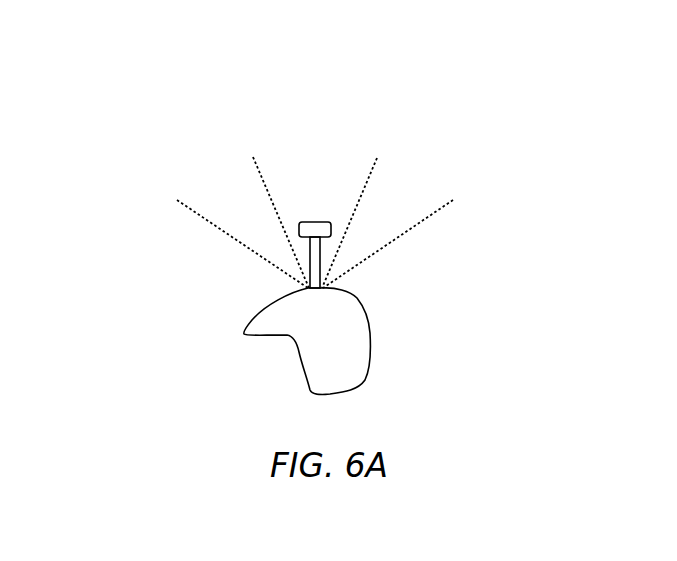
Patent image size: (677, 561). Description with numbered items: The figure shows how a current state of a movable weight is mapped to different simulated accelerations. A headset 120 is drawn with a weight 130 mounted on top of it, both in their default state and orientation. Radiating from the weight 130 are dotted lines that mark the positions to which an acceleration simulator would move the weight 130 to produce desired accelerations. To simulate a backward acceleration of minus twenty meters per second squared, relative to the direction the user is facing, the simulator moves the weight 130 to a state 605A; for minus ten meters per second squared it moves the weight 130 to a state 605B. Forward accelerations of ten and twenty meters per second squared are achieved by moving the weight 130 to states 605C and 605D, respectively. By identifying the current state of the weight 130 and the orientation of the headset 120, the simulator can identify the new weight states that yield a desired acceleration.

The headset 120 is at (368, 370).
The weight 130 is at (316, 218).
The state 605A is at (232, 235).
The state 605B is at (270, 192).
The state 605C is at (357, 201).
The state 605D is at (416, 226).